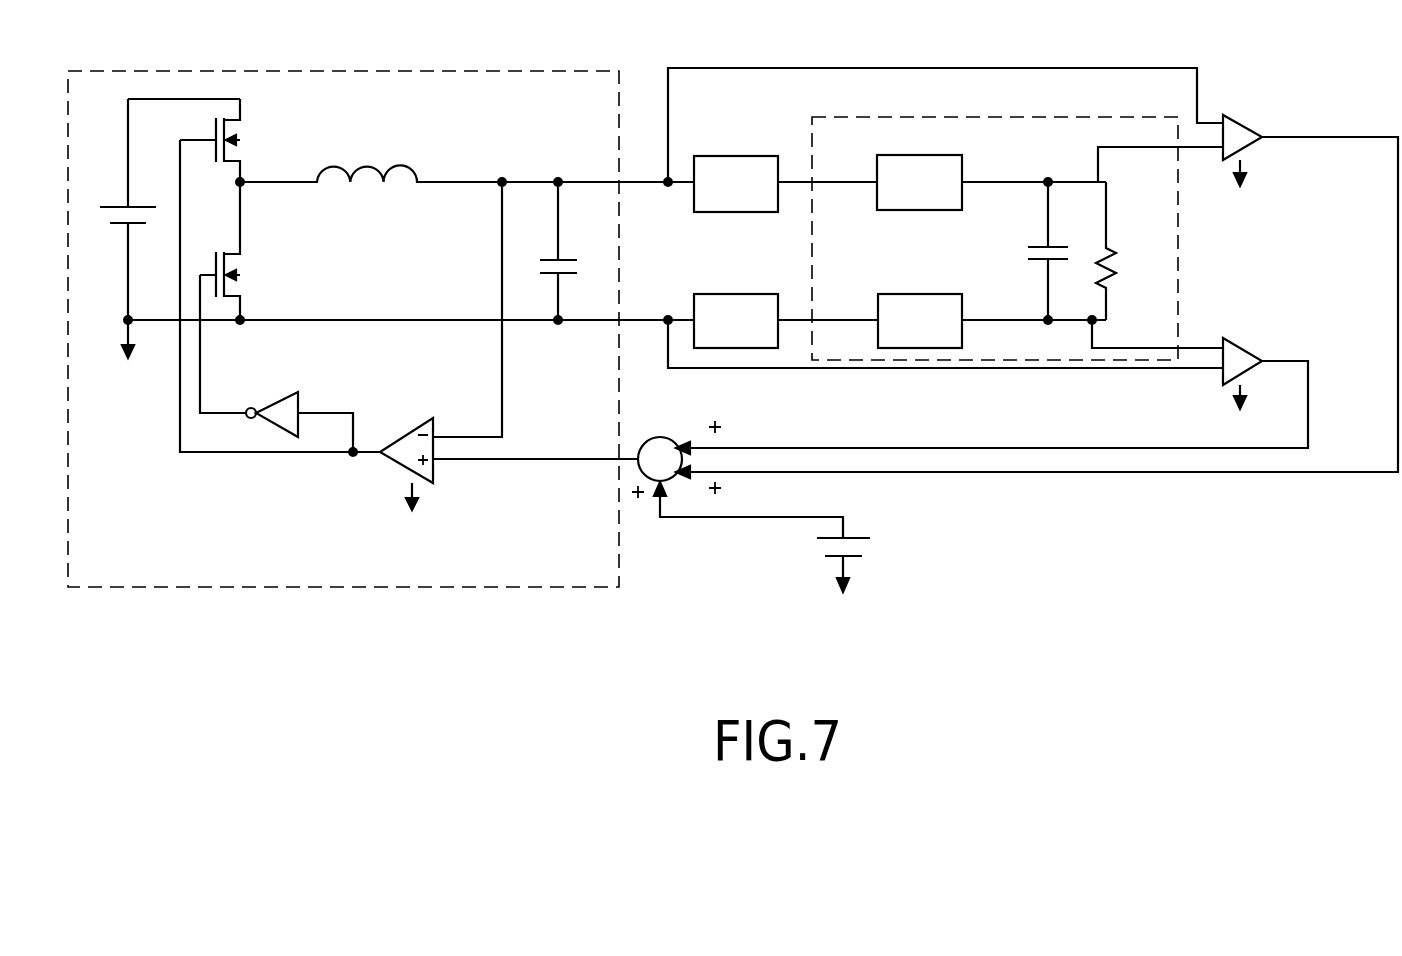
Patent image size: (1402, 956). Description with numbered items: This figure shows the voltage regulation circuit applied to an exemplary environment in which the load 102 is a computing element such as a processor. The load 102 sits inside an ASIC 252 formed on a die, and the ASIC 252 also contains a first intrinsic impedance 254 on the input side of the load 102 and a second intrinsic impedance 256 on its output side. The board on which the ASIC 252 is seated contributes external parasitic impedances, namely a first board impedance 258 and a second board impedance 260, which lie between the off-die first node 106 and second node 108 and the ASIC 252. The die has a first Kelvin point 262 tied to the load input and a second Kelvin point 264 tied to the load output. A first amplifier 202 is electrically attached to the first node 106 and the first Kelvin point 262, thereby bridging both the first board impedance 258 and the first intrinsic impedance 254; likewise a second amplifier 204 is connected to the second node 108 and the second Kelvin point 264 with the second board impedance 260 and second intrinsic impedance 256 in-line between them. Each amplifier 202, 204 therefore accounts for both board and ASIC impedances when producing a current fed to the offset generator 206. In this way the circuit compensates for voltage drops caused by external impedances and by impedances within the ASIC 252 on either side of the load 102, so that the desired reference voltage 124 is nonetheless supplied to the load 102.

The load 102 is at (1112, 250).
The first node 106 is at (668, 182).
The second node 108 is at (665, 323).
The reference voltage 124 is at (850, 560).
The first amplifier 202 is at (1248, 128).
The second amplifier 204 is at (1232, 340).
The offset generator 206 is at (728, 447).
The ASIC 252 is at (1135, 117).
The first intrinsic impedance 254 is at (938, 155).
The second intrinsic impedance 256 is at (960, 348).
The first board impedance 258 is at (750, 156).
The second board impedance 260 is at (715, 295).
The first Kelvin point 262 is at (1178, 147).
The second Kelvin point 264 is at (1178, 352).